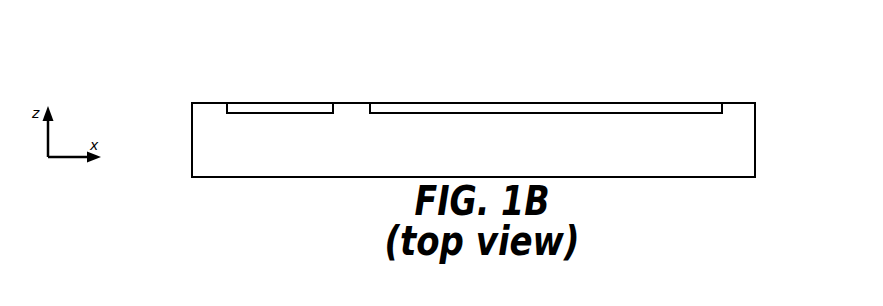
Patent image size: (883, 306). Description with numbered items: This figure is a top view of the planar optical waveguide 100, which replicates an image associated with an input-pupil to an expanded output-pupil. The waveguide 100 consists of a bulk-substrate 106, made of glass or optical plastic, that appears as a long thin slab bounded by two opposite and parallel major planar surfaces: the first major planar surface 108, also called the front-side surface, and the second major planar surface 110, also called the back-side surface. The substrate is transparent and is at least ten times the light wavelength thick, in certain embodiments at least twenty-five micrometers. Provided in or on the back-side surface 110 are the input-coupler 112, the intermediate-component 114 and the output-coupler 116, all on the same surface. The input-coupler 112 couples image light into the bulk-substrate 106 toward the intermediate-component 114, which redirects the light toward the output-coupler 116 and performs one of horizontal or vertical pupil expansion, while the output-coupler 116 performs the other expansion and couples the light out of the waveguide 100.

The planar optical waveguide 100 is at (469, 137).
The bulk-substrate 106 is at (741, 138).
The first major planar surface 108 is at (741, 176).
The second major planar surface 110 is at (745, 104).
The input-coupler 112 is at (303, 103).
The intermediate-component 114 is at (518, 103).
The output-coupler 116 is at (546, 85).